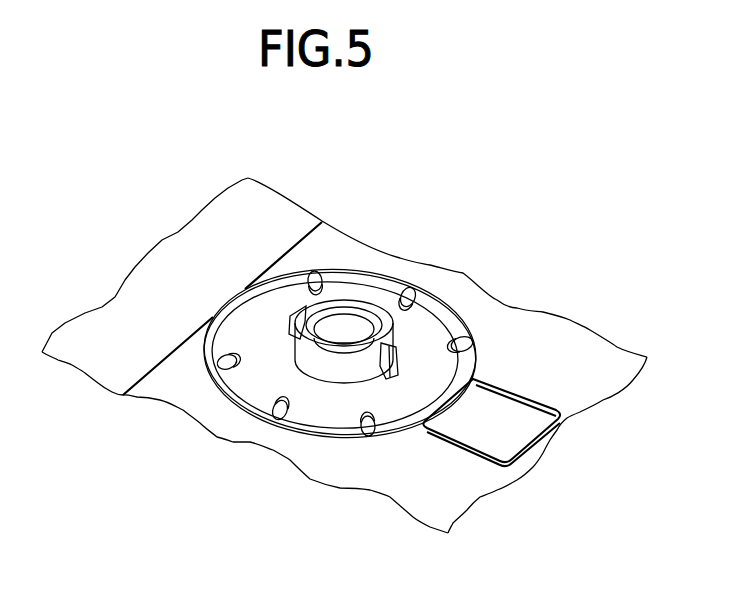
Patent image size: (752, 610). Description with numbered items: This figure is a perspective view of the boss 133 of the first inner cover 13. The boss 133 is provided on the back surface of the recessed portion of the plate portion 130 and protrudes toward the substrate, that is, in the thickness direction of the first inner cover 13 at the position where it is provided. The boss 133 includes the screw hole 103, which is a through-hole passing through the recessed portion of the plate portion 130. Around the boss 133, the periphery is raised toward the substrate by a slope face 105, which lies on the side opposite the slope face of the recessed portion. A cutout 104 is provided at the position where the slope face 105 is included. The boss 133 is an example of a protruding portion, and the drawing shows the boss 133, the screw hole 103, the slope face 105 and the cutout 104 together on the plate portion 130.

The first inner cover 13 is at (100, 208).
The screw hole 103 is at (338, 328).
The cutout 104 is at (477, 342).
The slope face 105 is at (358, 277).
The plate portion 130 is at (389, 476).
The boss 133 is at (367, 307).